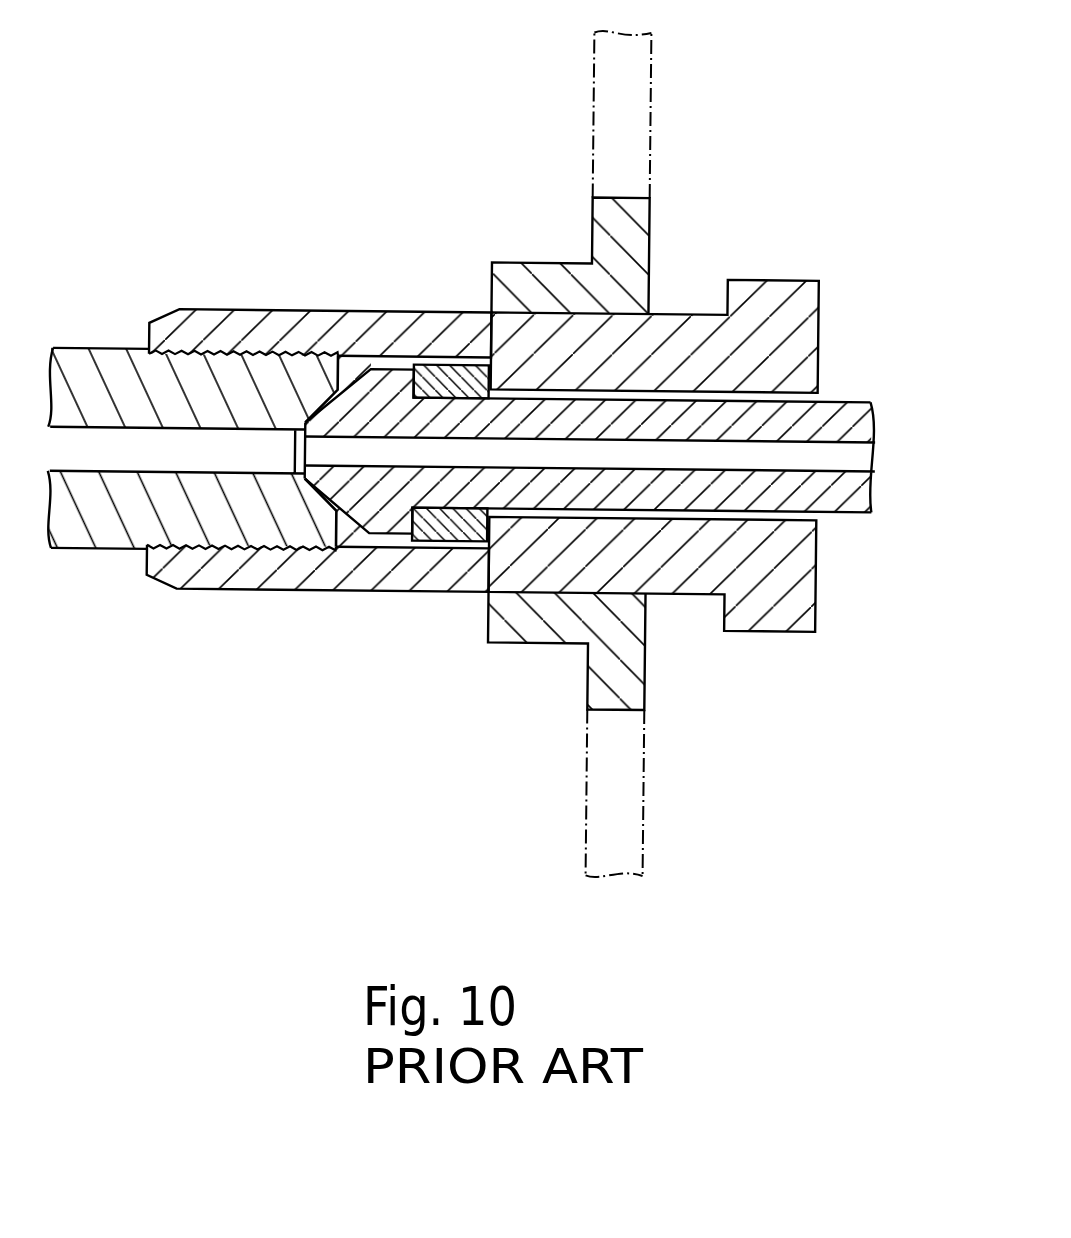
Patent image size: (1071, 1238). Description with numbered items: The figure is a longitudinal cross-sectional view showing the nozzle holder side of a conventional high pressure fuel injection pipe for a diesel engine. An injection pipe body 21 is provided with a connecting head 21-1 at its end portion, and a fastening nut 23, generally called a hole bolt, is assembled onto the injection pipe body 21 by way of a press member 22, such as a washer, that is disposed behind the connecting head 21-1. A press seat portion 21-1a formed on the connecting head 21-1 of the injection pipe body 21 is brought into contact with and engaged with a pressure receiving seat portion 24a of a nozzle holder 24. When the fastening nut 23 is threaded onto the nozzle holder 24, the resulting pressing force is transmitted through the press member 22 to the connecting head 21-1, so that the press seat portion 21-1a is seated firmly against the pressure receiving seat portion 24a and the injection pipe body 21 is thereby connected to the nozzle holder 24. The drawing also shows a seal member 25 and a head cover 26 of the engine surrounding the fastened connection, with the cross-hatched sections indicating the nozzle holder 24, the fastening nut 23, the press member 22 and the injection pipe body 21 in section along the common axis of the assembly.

The injection pipe body 21 is at (847, 413).
The connecting head 21-1 is at (350, 398).
The press seat portion 21-1a is at (355, 512).
The press member 22 is at (453, 383).
The fastening nut 23 is at (690, 340).
The nozzle holder 24 is at (85, 367).
The pressure receiving seat portion 24a is at (273, 543).
The seal member 25 is at (607, 238).
The head cover 26 is at (627, 78).